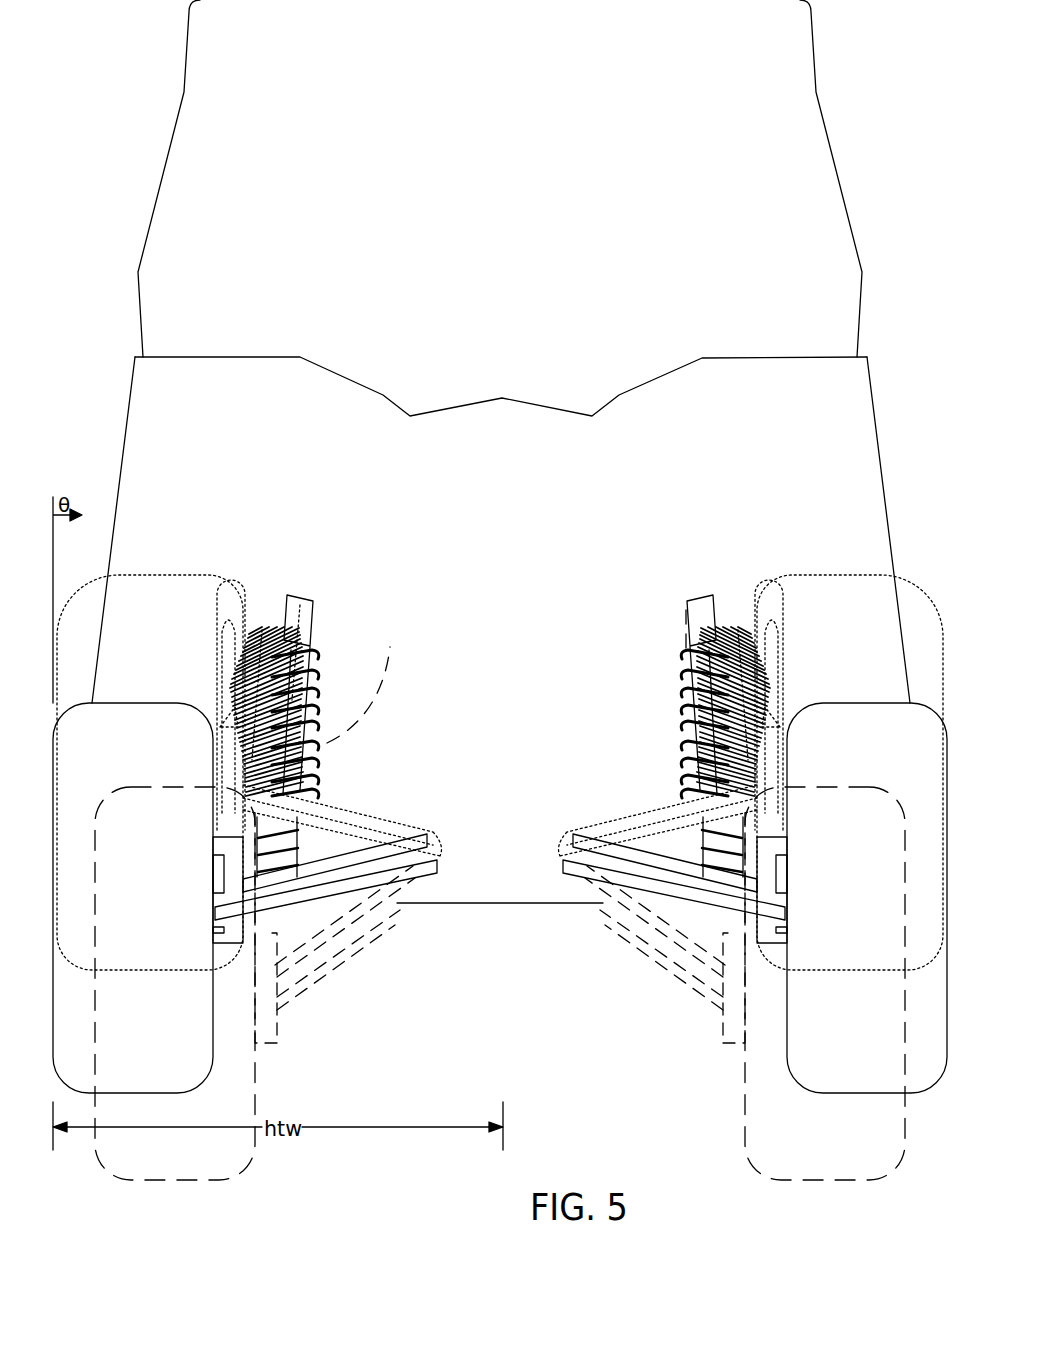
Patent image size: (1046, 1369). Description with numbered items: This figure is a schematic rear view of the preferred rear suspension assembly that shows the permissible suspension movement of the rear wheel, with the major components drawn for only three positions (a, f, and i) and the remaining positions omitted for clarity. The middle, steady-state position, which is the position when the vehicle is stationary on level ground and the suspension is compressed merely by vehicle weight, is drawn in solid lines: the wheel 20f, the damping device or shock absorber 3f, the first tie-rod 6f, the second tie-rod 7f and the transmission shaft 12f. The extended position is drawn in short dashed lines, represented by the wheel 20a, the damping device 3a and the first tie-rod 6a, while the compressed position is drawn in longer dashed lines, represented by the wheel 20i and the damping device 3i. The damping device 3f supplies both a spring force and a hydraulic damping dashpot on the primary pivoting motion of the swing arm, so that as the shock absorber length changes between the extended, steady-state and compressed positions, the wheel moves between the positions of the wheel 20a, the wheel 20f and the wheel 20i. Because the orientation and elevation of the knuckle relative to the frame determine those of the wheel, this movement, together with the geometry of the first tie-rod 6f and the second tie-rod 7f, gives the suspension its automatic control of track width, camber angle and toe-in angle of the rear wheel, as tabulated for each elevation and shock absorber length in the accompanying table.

The wheel 20a is at (212, 572).
The wheel 20f is at (210, 1073).
The wheel 20i is at (248, 1160).
The damping device 3a is at (262, 630).
The damping device 3f is at (296, 632).
The damping device 3i is at (506, 676).
The first tie-rod 6a is at (340, 805).
The first tie-rod 6f is at (360, 850).
The transmission shaft 12f is at (432, 838).
The second tie-rod 7f is at (402, 868).